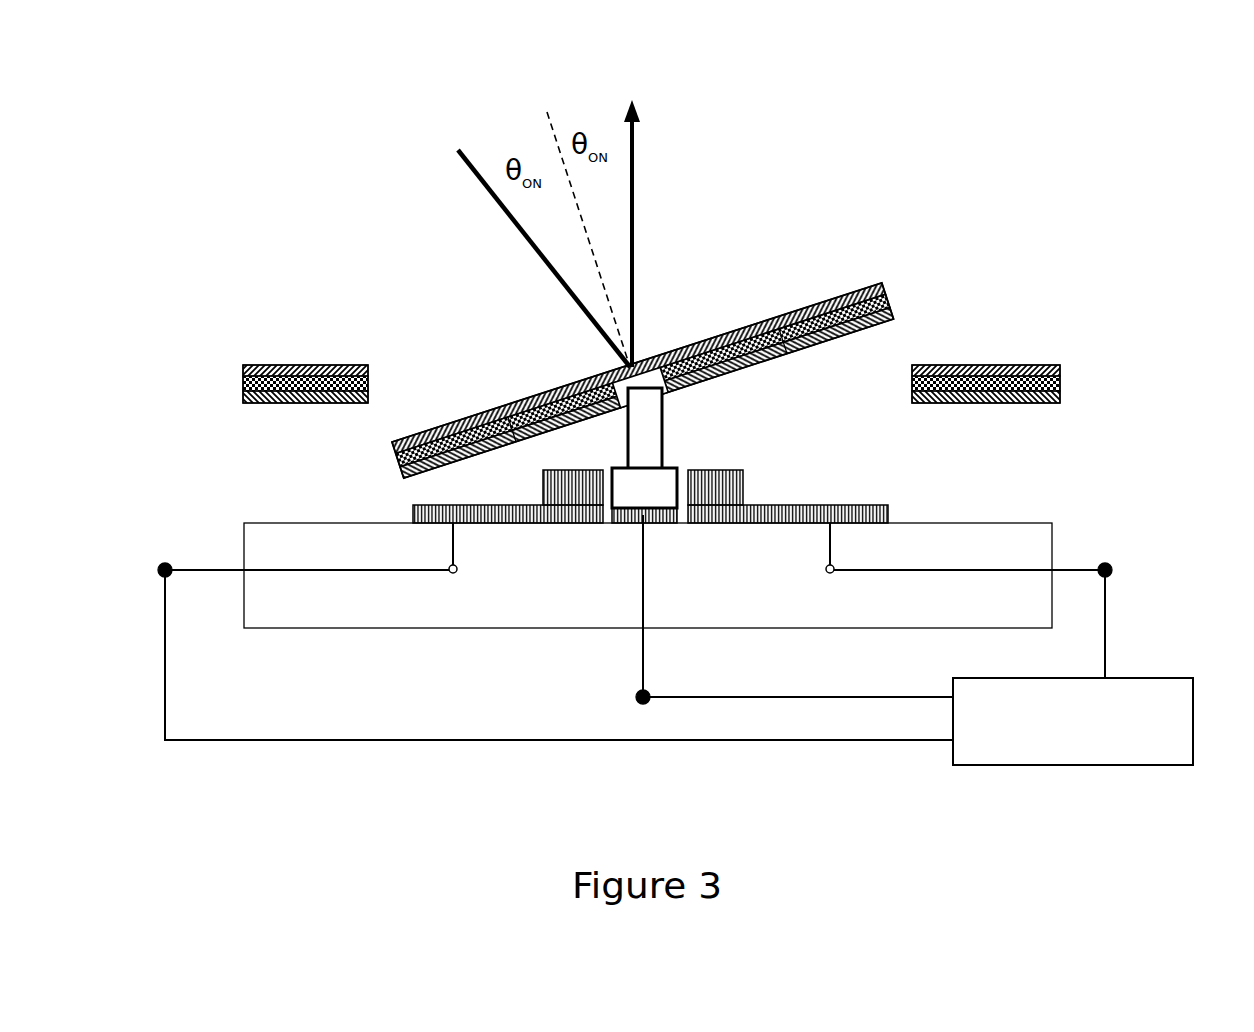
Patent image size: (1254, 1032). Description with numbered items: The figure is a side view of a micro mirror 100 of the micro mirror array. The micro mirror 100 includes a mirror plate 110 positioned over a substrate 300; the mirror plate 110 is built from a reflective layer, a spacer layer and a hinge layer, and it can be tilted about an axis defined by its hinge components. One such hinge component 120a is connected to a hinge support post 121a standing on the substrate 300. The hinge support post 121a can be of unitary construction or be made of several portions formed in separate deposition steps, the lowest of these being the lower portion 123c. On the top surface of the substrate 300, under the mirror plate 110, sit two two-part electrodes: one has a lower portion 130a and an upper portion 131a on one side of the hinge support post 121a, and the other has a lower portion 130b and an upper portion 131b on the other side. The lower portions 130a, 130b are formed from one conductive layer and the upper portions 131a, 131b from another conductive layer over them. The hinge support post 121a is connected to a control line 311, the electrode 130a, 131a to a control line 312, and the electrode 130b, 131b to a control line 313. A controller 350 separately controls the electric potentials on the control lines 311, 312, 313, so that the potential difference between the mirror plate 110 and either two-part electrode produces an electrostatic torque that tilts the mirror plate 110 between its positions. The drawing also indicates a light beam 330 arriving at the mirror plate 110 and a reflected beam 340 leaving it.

The micro mirror 100 is at (907, 140).
The mirror plate 110 is at (643, 380).
The hinge component 120a is at (650, 393).
The hinge support post 121a is at (665, 446).
The lower portion of hinge support post 123c is at (644, 495).
The electrode lower portion 130a is at (774, 526).
The electrode lower portion 130b is at (509, 526).
The electrode upper portion 131a is at (725, 492).
The electrode upper portion 131b is at (550, 488).
The substrate 300 is at (648, 575).
The control line 311 is at (772, 612).
The control line 312 is at (526, 631).
The control line 313 is at (989, 600).
The incident light beam 330 is at (516, 231).
The reflected light beam 340 is at (640, 198).
The controller 350 is at (1132, 695).